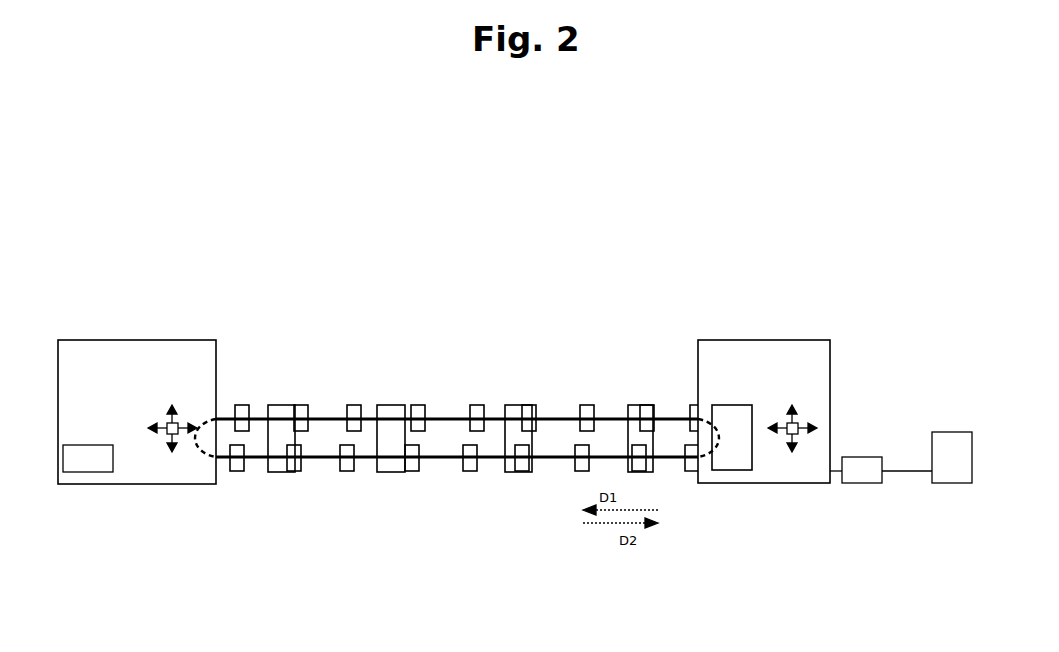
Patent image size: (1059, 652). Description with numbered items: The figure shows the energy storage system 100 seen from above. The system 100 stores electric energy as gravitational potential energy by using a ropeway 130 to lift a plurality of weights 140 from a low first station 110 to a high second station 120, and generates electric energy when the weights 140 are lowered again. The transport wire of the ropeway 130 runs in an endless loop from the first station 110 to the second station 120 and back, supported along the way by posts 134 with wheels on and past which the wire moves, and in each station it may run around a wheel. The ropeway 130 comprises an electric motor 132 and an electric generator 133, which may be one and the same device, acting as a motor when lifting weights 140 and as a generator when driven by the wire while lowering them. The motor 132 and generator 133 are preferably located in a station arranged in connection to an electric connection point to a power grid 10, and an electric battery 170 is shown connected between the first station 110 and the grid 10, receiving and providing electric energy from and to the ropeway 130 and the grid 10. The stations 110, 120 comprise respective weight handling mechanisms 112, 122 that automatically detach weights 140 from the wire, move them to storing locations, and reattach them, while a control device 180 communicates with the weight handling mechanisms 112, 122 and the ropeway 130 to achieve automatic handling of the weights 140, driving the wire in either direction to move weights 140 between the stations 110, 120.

The system 100 is at (348, 170).
The first station 110 is at (742, 373).
The weight handling mechanism 112 is at (792, 405).
The second station 120 is at (137, 387).
The weight handling mechanism 122 is at (172, 405).
The ropeway 130 is at (490, 455).
The electric motor 132 is at (703, 366).
The electric generator 133 is at (733, 405).
The posts 134 is at (390, 475).
The weights 140 is at (252, 417).
The electric battery 170 is at (856, 470).
The control device 180 is at (88, 458).
The electric power grid 10 is at (927, 457).